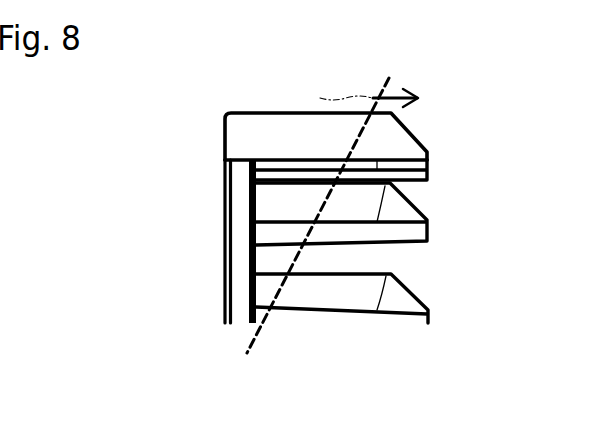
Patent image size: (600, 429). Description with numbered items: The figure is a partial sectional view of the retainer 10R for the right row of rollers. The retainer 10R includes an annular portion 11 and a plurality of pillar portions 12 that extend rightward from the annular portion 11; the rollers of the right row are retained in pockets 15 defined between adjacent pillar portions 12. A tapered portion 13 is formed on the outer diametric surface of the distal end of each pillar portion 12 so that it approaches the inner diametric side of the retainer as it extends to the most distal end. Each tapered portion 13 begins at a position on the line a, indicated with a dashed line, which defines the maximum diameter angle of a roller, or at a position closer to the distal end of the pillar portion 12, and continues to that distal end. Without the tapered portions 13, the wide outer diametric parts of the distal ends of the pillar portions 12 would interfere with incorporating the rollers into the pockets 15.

The retainer for the right row 10R is at (182, 128).
The annular portion 11 is at (240, 239).
The pillar portion 12 is at (270, 128).
The tapered portion 13 is at (413, 130).
The pocket 15 is at (377, 257).